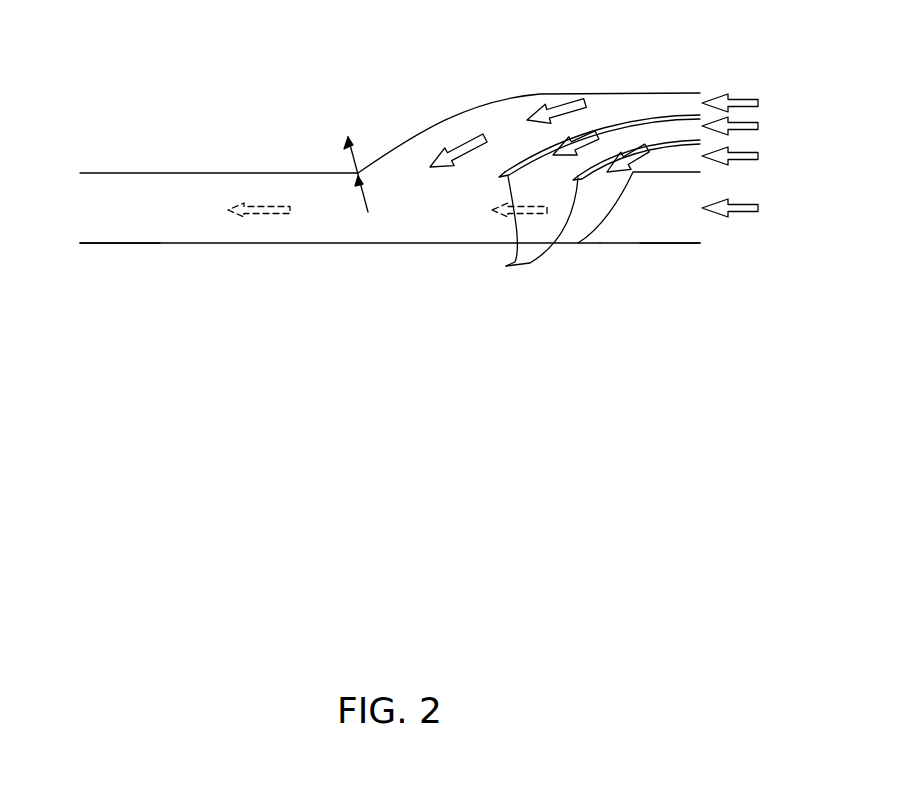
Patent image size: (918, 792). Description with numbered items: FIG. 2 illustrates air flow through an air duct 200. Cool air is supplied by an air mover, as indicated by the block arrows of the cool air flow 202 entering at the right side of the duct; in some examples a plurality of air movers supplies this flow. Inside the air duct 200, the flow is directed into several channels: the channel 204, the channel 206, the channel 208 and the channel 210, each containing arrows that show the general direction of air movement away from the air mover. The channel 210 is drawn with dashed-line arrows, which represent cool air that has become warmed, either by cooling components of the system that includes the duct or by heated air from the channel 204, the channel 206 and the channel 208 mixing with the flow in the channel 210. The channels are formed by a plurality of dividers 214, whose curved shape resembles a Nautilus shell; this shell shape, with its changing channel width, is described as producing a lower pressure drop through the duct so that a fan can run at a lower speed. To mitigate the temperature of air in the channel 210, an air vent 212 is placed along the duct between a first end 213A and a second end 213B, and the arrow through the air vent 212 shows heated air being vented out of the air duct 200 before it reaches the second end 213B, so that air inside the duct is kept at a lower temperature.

The air duct 200 is at (412, 675).
The cool air flow 202 is at (783, 82).
The channel 204 is at (613, 100).
The channel 206 is at (660, 127).
The channel 208 is at (680, 155).
The channel 210 is at (690, 222).
The air vent 212 is at (357, 170).
The first end 213A is at (692, 246).
The second end 213B is at (102, 246).
The dividers 214 is at (506, 266).